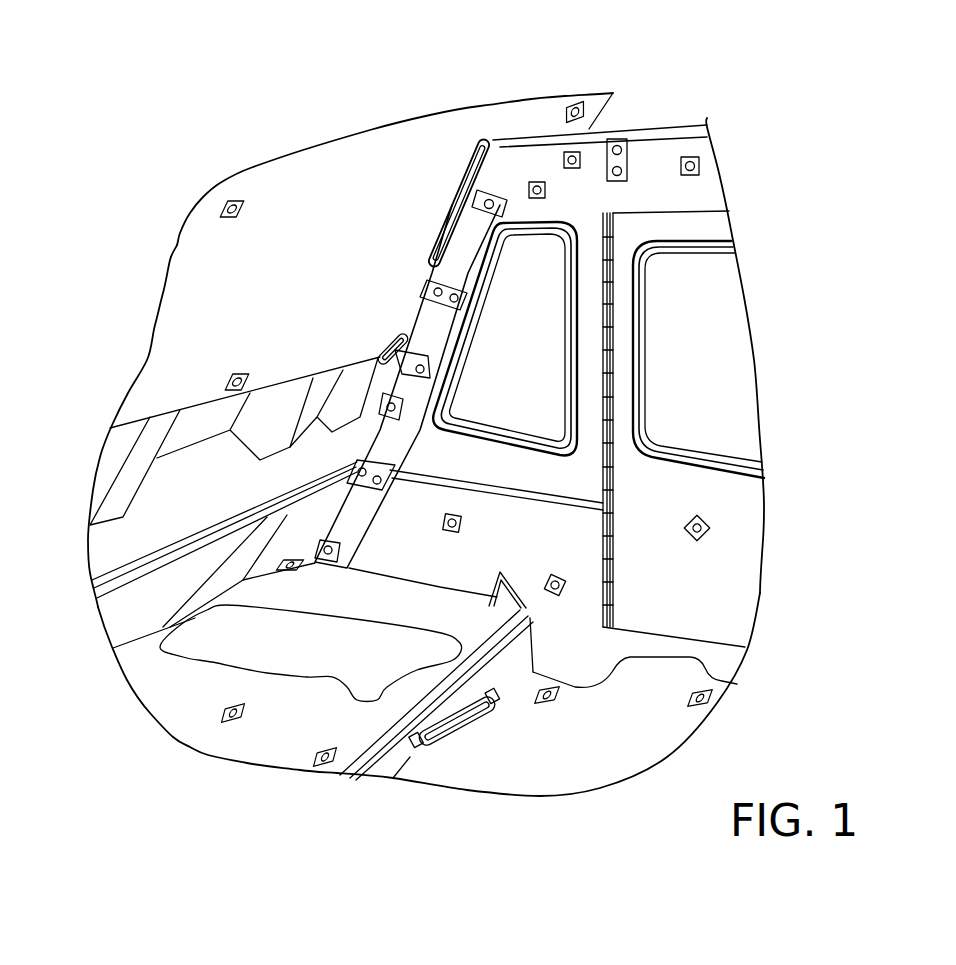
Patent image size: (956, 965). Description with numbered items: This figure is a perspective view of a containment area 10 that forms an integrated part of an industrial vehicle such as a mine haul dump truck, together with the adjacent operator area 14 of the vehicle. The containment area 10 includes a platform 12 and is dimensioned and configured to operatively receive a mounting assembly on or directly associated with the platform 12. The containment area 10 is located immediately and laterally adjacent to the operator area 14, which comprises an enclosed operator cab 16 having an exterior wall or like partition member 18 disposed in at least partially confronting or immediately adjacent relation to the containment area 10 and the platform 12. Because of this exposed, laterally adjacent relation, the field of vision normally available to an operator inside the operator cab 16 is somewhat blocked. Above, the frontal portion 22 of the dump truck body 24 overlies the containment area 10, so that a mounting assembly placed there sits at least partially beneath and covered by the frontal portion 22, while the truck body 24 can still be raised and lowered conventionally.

The containment area 10 is at (299, 686).
The platform 12 is at (490, 667).
The operator area 14 is at (753, 223).
The enclosed operator cab 16 is at (625, 133).
The exterior wall 18 is at (580, 470).
The frontal portion 22 is at (227, 295).
The dump truck body 24 is at (168, 197).